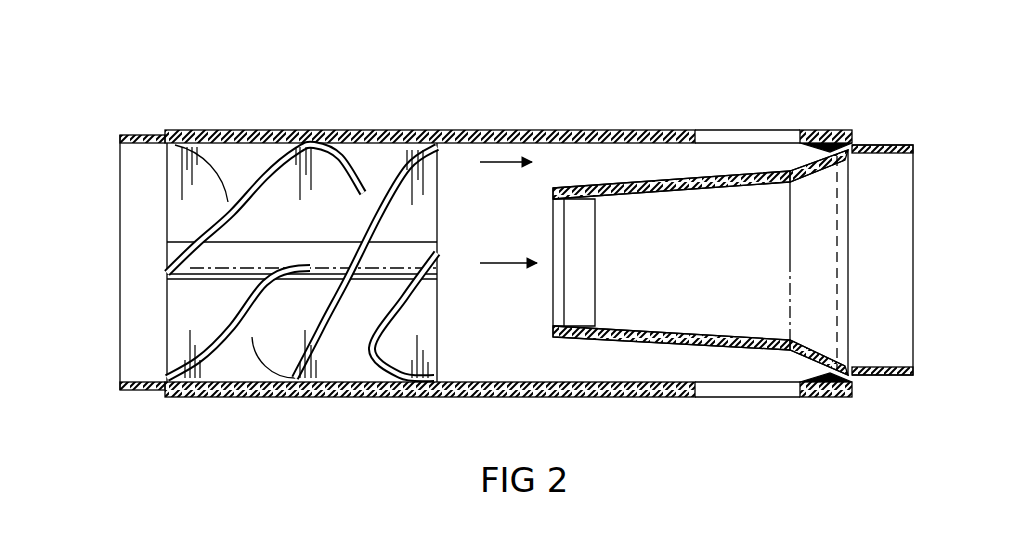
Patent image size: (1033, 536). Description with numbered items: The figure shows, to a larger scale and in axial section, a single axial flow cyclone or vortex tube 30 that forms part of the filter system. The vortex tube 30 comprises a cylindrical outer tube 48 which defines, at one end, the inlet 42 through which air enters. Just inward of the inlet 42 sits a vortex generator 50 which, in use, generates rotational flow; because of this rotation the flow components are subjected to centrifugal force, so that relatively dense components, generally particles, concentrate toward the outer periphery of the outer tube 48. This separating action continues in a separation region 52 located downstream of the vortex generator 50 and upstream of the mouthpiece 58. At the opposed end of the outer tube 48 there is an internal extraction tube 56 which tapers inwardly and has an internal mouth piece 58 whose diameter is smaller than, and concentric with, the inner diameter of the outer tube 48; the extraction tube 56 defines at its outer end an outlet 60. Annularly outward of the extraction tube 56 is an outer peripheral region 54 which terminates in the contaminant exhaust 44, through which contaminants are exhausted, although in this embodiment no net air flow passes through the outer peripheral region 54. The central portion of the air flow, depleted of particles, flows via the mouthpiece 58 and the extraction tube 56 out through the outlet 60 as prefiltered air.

The vortex tube 30 is at (462, 239).
The inlet 42 is at (122, 190).
The contaminant exhaust 44 is at (653, 140).
The outer tube 48 is at (302, 223).
The vortex generator 50 is at (266, 132).
The separation region 52 is at (496, 202).
The outer peripheral region 54 is at (598, 162).
The internal extraction tube 56 is at (700, 262).
The internal mouth piece 58 is at (566, 263).
The outlet 60 is at (902, 331).